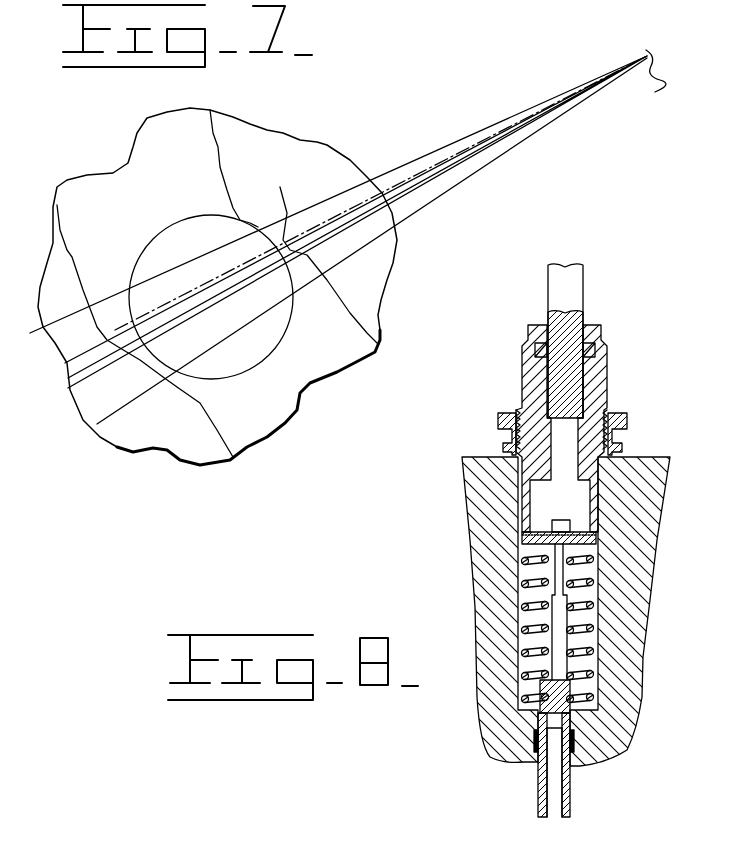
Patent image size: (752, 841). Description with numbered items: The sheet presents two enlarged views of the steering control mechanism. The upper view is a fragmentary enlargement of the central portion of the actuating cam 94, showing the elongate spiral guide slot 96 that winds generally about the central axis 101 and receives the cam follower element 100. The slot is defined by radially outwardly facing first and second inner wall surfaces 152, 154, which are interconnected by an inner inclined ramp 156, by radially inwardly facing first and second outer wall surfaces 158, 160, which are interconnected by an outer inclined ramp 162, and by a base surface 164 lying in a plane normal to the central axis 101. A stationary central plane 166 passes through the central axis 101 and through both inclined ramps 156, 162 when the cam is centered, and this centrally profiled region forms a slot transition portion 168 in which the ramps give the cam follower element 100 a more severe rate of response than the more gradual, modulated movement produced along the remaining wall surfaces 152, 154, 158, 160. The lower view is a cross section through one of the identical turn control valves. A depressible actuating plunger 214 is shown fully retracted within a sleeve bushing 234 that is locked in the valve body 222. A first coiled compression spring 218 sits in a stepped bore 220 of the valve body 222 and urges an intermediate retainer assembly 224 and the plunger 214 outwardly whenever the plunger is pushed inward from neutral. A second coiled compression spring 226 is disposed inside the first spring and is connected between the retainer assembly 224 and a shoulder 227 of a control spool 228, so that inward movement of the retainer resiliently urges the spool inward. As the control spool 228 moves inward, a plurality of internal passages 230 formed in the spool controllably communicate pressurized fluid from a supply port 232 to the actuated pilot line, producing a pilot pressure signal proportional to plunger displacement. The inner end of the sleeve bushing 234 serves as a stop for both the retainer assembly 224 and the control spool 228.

In FIG. 7, the actuating cam 94 is at (279, 129).
In FIG. 7, the elongate spiral guide slot 96 is at (78, 246).
In FIG. 7, the cam follower element 100 is at (163, 231).
In FIG. 7, the central axis 101 is at (348, 237).
In FIG. 7, the first inner wall surface 152 is at (213, 132).
In FIG. 7, the second inner wall surface 154 is at (352, 317).
In FIG. 7, the inner inclined ramp 156 is at (313, 260).
In FIG. 7, the first outer wall surface 158 is at (58, 226).
In FIG. 7, the second outer wall surface 160 is at (222, 430).
In FIG. 7, the outer inclined ramp 162 is at (143, 360).
In FIG. 7, the base surface 164 is at (262, 406).
In FIG. 7, the stationary central plane 166 is at (447, 172).
In FIG. 7, the slot transition portion 168 is at (88, 338).
In FIG. 8, the depressible actuating plunger 214 is at (575, 292).
In FIG. 8, the first coiled compression spring 218 is at (590, 705).
In FIG. 8, the stepped bore 220 is at (596, 551).
In FIG. 8, the valve body 222 is at (520, 742).
In FIG. 8, the intermediate retainer assembly 224 is at (522, 552).
In FIG. 8, the second coiled compression spring 226 is at (553, 593).
In FIG. 8, the shoulder 227 is at (597, 656).
In FIG. 8, the control spool 228 is at (540, 793).
In FIG. 8, the internal passages 230 is at (558, 786).
In FIG. 8, the supply port 232 is at (575, 737).
In FIG. 8, the sleeve bushing 234 is at (593, 382).